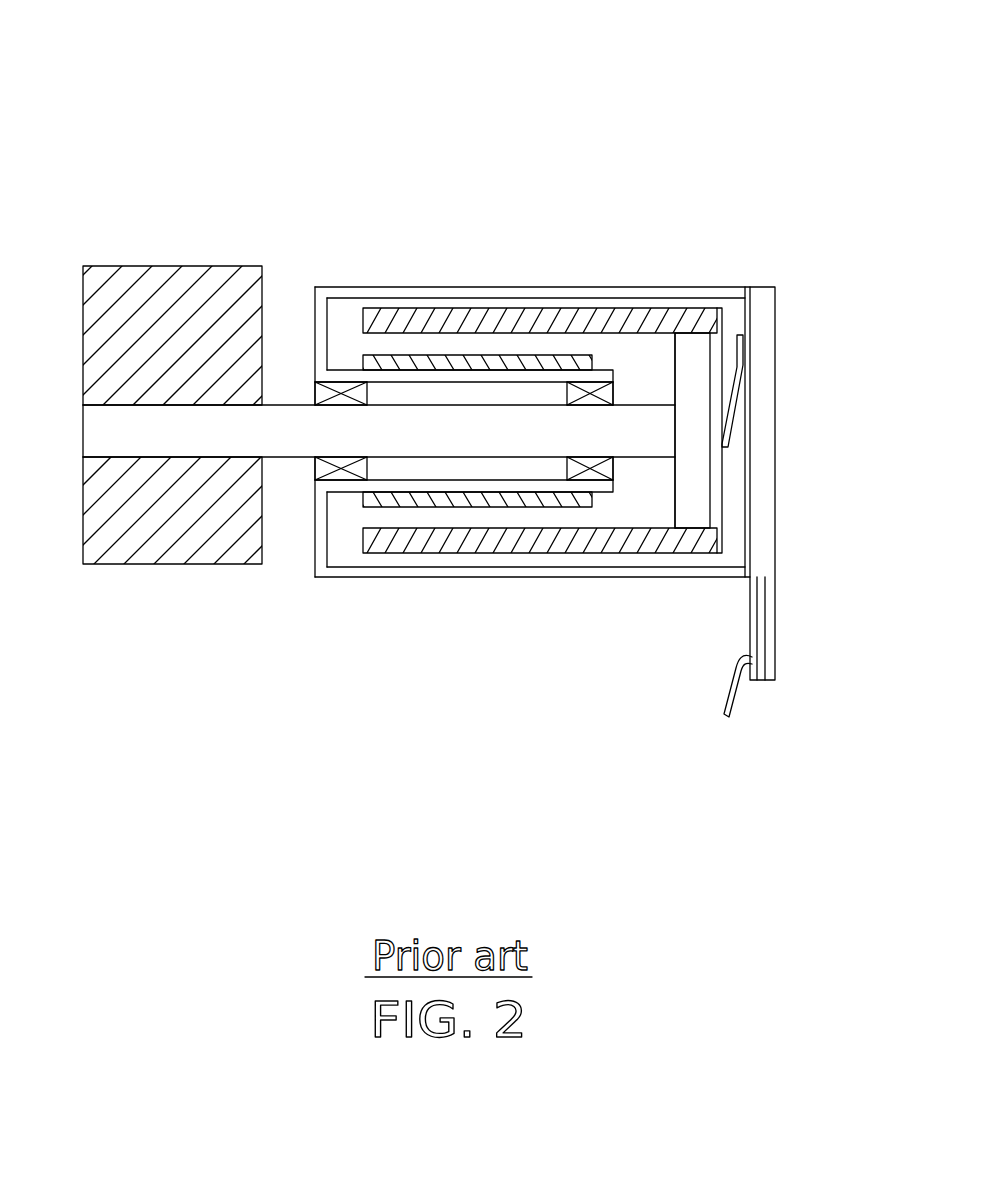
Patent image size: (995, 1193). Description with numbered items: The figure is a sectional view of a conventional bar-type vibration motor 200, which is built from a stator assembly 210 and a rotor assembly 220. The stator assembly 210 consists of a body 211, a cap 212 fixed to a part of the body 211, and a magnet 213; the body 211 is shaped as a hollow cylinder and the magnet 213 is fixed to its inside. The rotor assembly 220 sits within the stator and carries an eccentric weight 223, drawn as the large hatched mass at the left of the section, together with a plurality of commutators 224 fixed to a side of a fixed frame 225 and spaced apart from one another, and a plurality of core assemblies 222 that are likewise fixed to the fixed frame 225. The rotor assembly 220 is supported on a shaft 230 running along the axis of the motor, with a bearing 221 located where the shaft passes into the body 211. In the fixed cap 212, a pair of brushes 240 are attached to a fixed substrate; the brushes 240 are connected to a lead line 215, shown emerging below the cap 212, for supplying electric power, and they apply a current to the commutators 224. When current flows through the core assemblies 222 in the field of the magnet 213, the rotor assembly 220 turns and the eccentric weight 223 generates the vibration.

The bar-type vibration motor 200 is at (297, 185).
The stator assembly 210 is at (773, 167).
The body 211 is at (632, 287).
The cap 212 is at (760, 287).
The magnet 213 is at (435, 362).
The lead line 215 is at (737, 702).
The rotor assembly 220 is at (668, 687).
The bearing 221 is at (318, 470).
The core assemblies 222 is at (530, 553).
The eccentric weight 223 is at (157, 545).
The commutators 224 is at (717, 517).
The fixed frame 225 is at (680, 508).
The shaft 230 is at (87, 433).
The brushes 240 is at (732, 392).